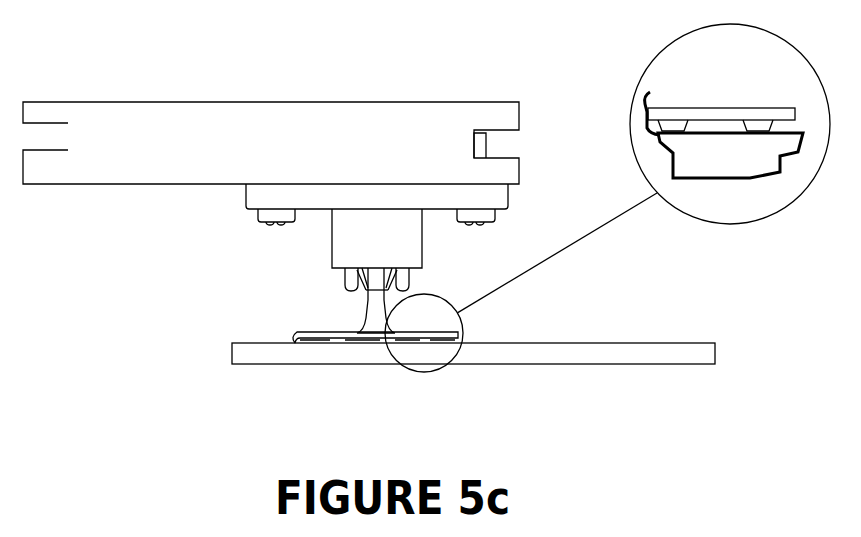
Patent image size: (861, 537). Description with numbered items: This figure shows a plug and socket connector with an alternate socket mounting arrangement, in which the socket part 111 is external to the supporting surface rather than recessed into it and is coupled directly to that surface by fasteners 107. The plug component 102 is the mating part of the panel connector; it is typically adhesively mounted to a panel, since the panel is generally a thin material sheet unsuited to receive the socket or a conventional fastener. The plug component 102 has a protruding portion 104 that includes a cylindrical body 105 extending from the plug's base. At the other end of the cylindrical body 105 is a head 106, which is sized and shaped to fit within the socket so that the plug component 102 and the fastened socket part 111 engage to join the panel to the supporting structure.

The plug component 102 is at (295, 333).
The protruding portion 104 is at (406, 278).
The cylindrical body 105 is at (372, 317).
The head 106 is at (343, 282).
The fasteners 107 is at (272, 222).
The socket part 111 is at (482, 195).